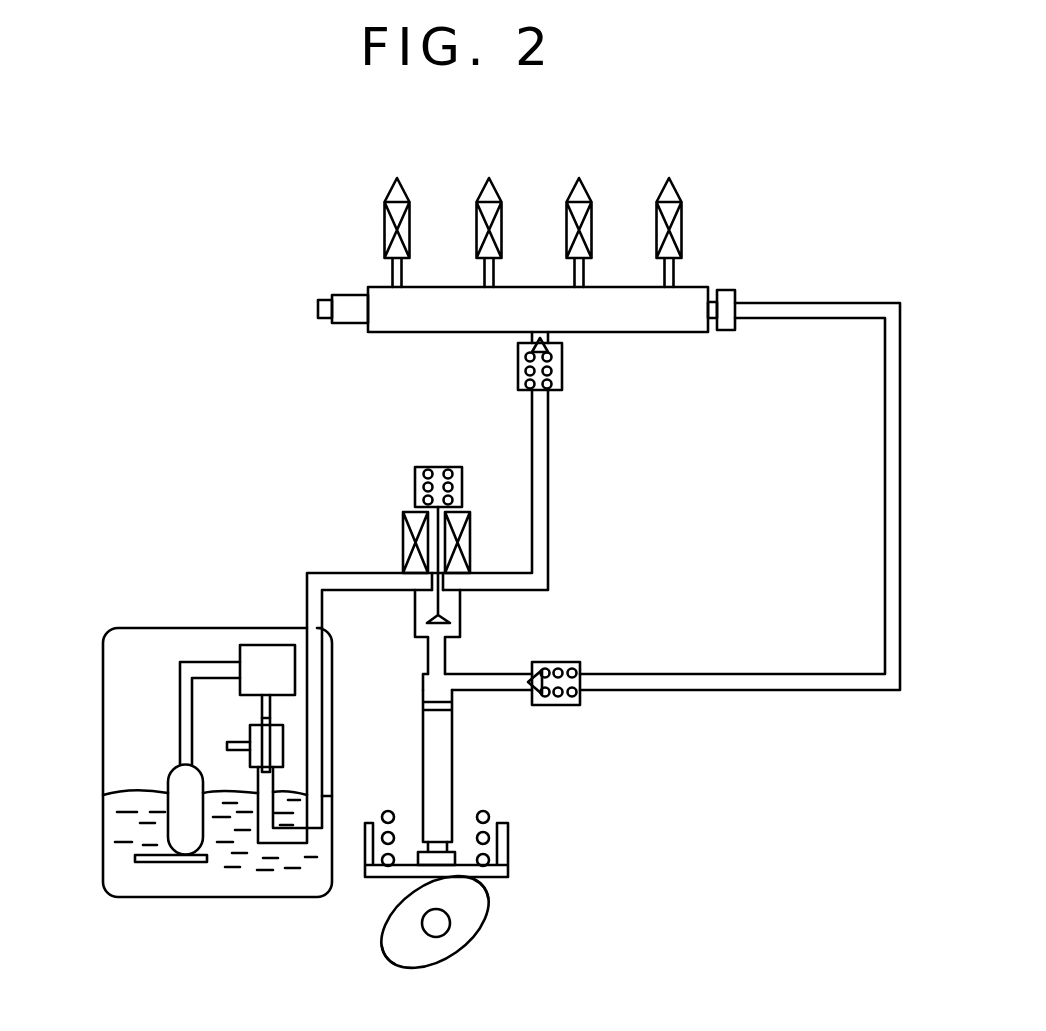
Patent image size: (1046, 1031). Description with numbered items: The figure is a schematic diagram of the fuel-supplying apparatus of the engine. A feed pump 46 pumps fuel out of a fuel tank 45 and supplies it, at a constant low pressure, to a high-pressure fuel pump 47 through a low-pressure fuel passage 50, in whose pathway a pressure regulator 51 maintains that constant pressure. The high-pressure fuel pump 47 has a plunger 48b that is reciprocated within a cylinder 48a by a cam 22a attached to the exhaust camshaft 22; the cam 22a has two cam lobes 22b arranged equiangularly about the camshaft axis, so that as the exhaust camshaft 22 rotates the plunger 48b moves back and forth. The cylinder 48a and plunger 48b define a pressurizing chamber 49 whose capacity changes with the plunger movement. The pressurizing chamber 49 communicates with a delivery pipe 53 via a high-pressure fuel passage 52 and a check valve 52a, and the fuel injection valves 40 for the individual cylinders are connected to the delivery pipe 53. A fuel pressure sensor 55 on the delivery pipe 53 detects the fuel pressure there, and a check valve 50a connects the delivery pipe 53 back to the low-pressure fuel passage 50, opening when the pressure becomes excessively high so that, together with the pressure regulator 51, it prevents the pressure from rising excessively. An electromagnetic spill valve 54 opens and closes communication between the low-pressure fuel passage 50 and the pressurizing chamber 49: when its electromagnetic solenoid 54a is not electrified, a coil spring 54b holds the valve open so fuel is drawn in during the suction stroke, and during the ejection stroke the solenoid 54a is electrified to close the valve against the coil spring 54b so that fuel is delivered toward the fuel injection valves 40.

The exhaust camshaft 22 is at (443, 930).
The cam 22a is at (480, 930).
The cam lobes 22b is at (482, 883).
The fuel injection valves 40 is at (408, 202).
The fuel tank 45 is at (117, 631).
The feed pump 46 is at (186, 845).
The high-pressure fuel pump 47 is at (461, 783).
The cylinder 48a is at (452, 735).
The plunger 48b is at (440, 785).
The pressurizing chamber 49 is at (437, 688).
The low-pressure fuel passage 50 is at (548, 480).
The check valve 50a is at (563, 347).
The pressure regulator 51 is at (250, 727).
The high-pressure fuel passage 52 is at (722, 683).
The check valve 52a is at (538, 703).
The delivery pipe 53 is at (425, 333).
The electromagnetic spill valve 54 is at (413, 537).
The electromagnetic solenoid 54a is at (403, 538).
The coil spring 54b is at (455, 487).
The fuel pressure sensor 55 is at (320, 315).